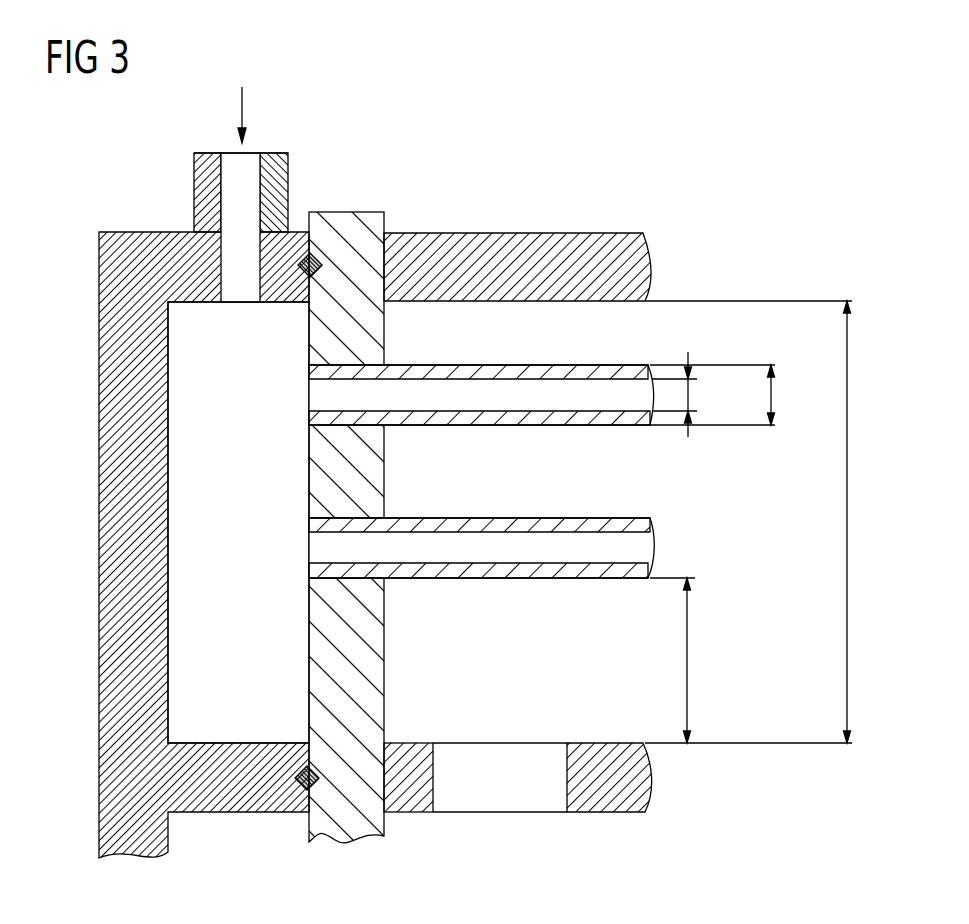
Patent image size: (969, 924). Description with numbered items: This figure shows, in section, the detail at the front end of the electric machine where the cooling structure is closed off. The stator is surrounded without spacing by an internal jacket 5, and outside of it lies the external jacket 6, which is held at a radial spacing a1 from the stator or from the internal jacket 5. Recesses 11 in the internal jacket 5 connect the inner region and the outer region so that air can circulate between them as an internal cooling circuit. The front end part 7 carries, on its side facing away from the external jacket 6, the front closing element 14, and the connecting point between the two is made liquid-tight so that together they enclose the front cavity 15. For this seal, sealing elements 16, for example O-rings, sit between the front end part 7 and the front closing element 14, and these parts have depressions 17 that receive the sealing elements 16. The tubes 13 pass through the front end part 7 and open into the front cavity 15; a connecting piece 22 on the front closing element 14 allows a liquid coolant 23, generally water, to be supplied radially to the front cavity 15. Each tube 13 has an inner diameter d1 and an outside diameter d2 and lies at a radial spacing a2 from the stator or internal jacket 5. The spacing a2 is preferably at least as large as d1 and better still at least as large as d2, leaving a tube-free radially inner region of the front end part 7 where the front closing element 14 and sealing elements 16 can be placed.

The internal jacket 5 is at (612, 795).
The external jacket 6 is at (528, 245).
The front end part 7 is at (384, 662).
The recesses 11 is at (500, 797).
The tubes 13 is at (466, 418).
The front closing element 14 is at (135, 440).
The front cavity 15 is at (196, 648).
The sealing elements 16 is at (310, 254).
The depressions 17 is at (326, 262).
The connecting piece 22 is at (205, 194).
The liquid coolant 23 is at (238, 110).
The radial spacing a1 is at (850, 520).
The radial spacing a2 is at (690, 660).
The inner diameter d1 is at (690, 397).
The outer diameter d2 is at (775, 397).